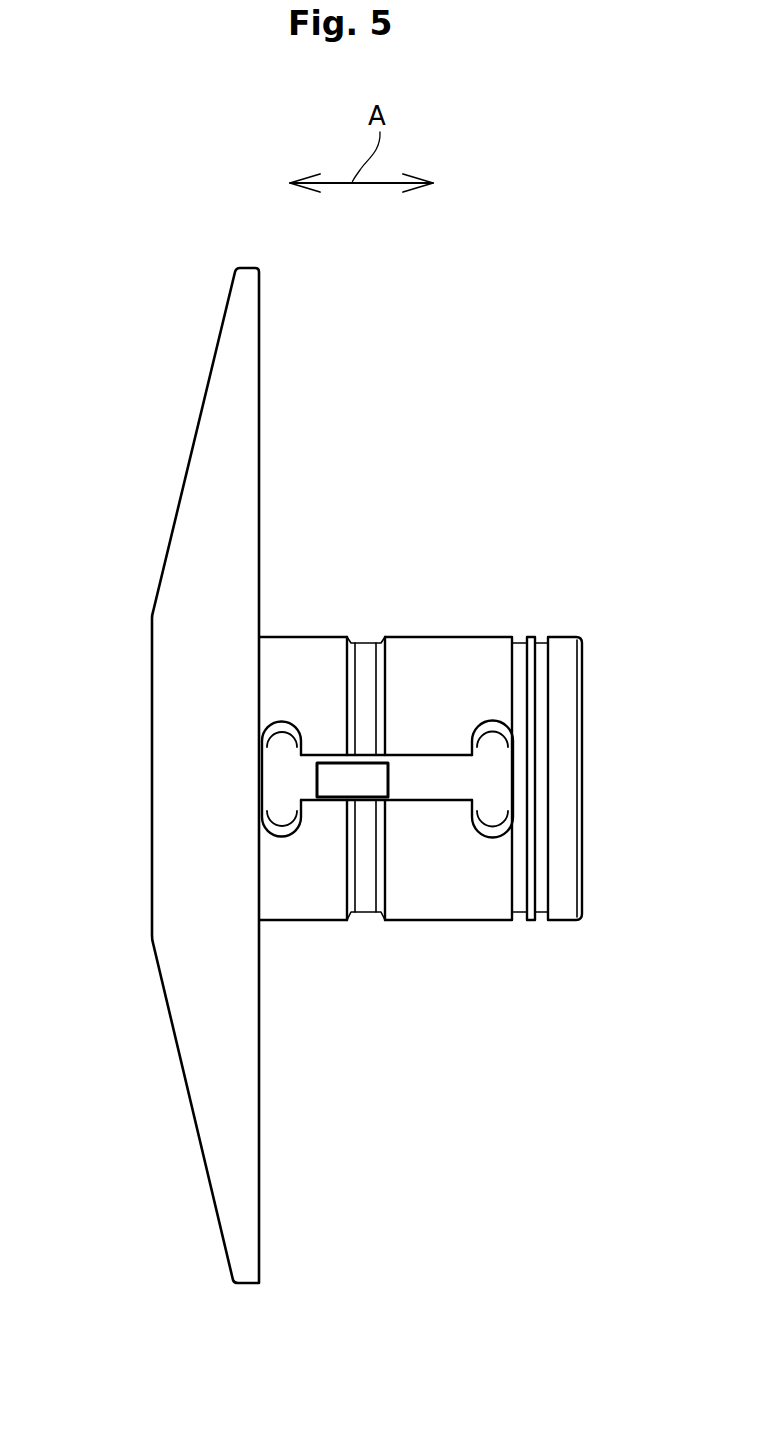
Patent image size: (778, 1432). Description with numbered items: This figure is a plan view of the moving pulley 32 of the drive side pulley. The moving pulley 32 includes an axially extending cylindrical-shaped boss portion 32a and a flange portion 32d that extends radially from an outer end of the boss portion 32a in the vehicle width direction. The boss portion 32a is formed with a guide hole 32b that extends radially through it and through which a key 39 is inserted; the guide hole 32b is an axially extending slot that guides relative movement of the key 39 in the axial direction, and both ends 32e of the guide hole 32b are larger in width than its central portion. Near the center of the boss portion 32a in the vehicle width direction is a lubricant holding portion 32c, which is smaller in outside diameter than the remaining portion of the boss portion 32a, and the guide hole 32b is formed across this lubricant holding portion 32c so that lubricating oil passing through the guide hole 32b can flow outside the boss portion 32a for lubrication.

The moving pulley 32 is at (444, 350).
The boss portion 32a is at (443, 637).
The guide hole 32b is at (428, 773).
The lubricant holding portion 32c is at (362, 637).
The flange portion 32d is at (243, 418).
The ends of guide hole 32e is at (280, 815).
The key 39 is at (337, 783).